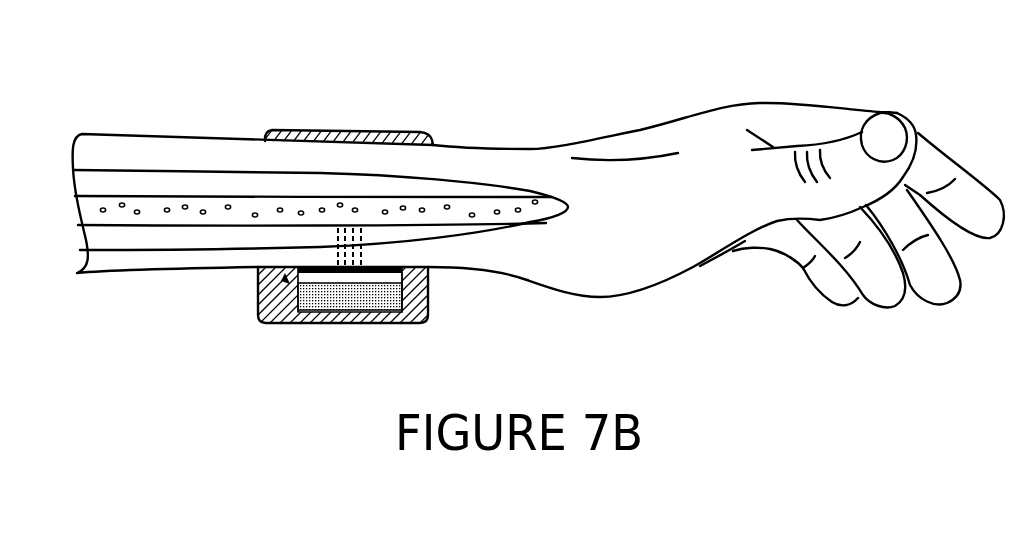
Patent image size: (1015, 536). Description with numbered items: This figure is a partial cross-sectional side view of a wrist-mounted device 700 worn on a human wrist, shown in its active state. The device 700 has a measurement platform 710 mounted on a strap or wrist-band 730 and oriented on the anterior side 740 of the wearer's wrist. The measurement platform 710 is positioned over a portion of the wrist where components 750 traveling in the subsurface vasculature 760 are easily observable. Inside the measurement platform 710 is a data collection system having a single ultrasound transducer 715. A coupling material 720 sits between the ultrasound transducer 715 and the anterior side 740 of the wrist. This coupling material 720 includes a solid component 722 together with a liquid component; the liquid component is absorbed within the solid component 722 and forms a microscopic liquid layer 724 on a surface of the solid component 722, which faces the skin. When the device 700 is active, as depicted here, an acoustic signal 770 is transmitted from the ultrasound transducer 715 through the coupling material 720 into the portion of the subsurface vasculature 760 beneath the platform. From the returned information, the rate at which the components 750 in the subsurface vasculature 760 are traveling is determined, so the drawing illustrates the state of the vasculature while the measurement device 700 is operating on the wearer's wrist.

The wrist-mounted device 700 is at (318, 208).
The measurement platform 710 is at (370, 324).
The ultrasound transducer 715 is at (328, 311).
The coupling material 720 is at (281, 282).
The solid component 722 is at (415, 272).
The microscopic liquid layer 724 is at (400, 268).
The strap or wrist-band 730 is at (363, 130).
The anterior side of the wearer's wrist 740 is at (527, 280).
The components in the subsurface vasculature 750 is at (167, 207).
The subsurface vasculature 760 is at (237, 193).
The acoustic signal 770 is at (333, 229).